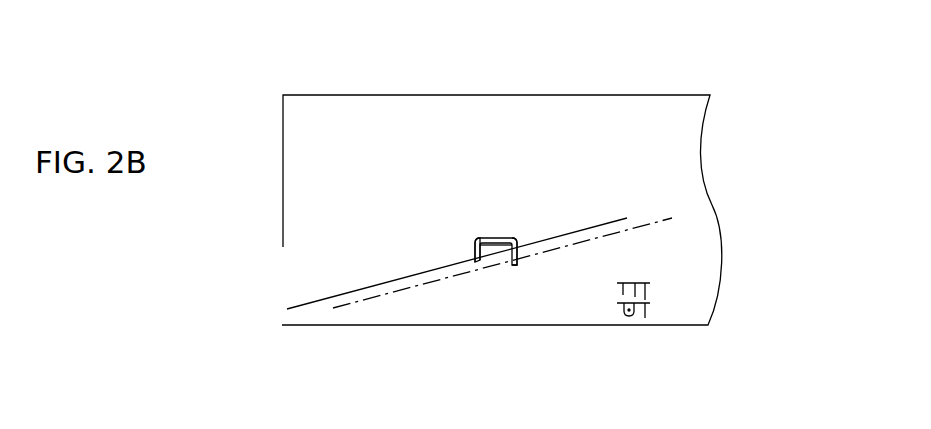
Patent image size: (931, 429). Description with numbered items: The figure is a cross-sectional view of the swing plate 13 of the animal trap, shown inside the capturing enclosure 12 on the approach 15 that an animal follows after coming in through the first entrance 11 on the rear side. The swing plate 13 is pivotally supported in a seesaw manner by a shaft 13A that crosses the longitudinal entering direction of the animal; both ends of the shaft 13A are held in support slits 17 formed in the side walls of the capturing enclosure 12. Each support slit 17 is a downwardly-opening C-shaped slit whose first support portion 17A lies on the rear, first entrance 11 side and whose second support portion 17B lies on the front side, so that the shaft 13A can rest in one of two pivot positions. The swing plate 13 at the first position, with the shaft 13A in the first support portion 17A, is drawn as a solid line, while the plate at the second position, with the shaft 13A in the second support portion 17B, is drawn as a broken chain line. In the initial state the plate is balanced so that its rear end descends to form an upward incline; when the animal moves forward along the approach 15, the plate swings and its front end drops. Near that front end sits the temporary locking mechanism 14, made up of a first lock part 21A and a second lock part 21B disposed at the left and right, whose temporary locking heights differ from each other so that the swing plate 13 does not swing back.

The first entrance 11 is at (285, 276).
The capturing enclosure 12 is at (400, 94).
The swing plate 13 is at (359, 291).
The shaft 13A is at (477, 263).
The temporary locking mechanism 14 is at (739, 287).
The approach 15 is at (656, 162).
The support slit 17 is at (492, 223).
The first support portion 17A is at (475, 253).
The second support portion 17B is at (545, 242).
The first lock part 21A is at (652, 283).
The second lock part 21B is at (652, 306).